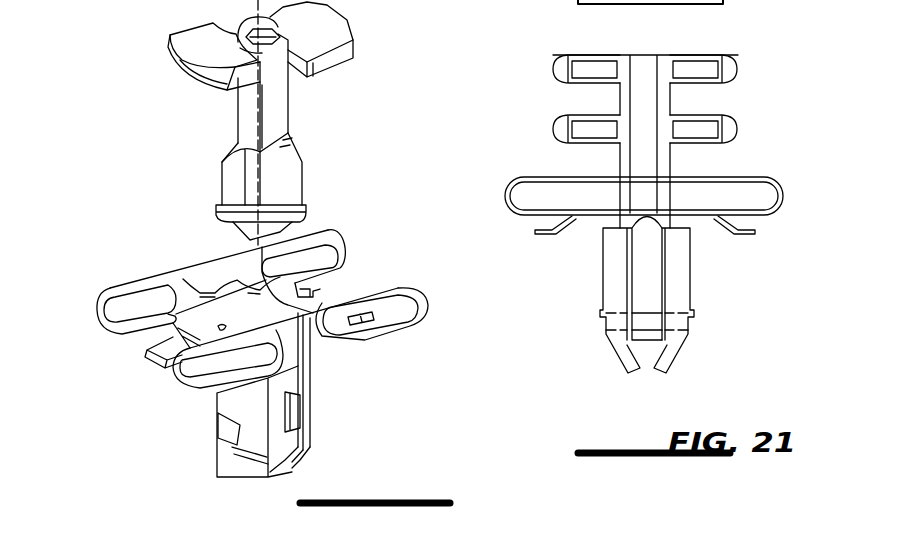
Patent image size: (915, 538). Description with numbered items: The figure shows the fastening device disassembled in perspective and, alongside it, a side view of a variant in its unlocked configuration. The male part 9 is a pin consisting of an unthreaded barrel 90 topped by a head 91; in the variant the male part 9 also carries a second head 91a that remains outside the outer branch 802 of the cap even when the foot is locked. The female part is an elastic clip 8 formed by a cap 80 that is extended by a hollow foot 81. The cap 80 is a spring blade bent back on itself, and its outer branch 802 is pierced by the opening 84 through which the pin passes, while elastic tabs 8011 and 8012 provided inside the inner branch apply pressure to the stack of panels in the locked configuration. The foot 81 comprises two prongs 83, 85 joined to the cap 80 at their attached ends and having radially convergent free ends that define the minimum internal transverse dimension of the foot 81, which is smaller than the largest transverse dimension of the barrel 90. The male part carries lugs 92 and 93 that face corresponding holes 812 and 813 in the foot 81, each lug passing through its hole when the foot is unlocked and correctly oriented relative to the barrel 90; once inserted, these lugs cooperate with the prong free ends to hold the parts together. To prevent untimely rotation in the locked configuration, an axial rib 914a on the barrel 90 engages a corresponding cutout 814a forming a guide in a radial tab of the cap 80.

In FIG. 20, the male part 9 is at (132, 170).
In FIG. 20, the head 91 is at (185, 58).
In FIG. 21, the head 91 is at (553, 130).
In FIG. 20, the barrel 90 is at (235, 118).
In FIG. 21, the barrel 90 is at (690, 157).
In FIG. 20, the axial rib 914a is at (280, 116).
In FIG. 20, the lug 92 is at (225, 210).
In FIG. 20, the lug 93 is at (302, 205).
In FIG. 20, the elastic clip 8 is at (100, 362).
In FIG. 20, the cap 80 is at (108, 306).
In FIG. 20, the opening 84 is at (222, 303).
In FIG. 21, the opening 84 is at (681, 290).
In FIG. 20, the elastic tab 8012 is at (352, 292).
In FIG. 21, the elastic tab 8012 is at (745, 234).
In FIG. 20, the elastic tab 8011 is at (158, 349).
In FIG. 21, the elastic tab 8011 is at (542, 236).
In FIG. 20, the hollow foot 81 is at (184, 421).
In FIG. 20, the prong 83 is at (225, 400).
In FIG. 21, the prong 83 is at (615, 290).
In FIG. 20, the hole 812 is at (221, 441).
In FIG. 20, the cutout 814a is at (316, 328).
In FIG. 20, the prong 85 is at (300, 388).
In FIG. 20, the hole 813 is at (306, 398).
In FIG. 21, the second head 91a is at (553, 70).
In FIG. 21, the outer branch 802 is at (545, 178).